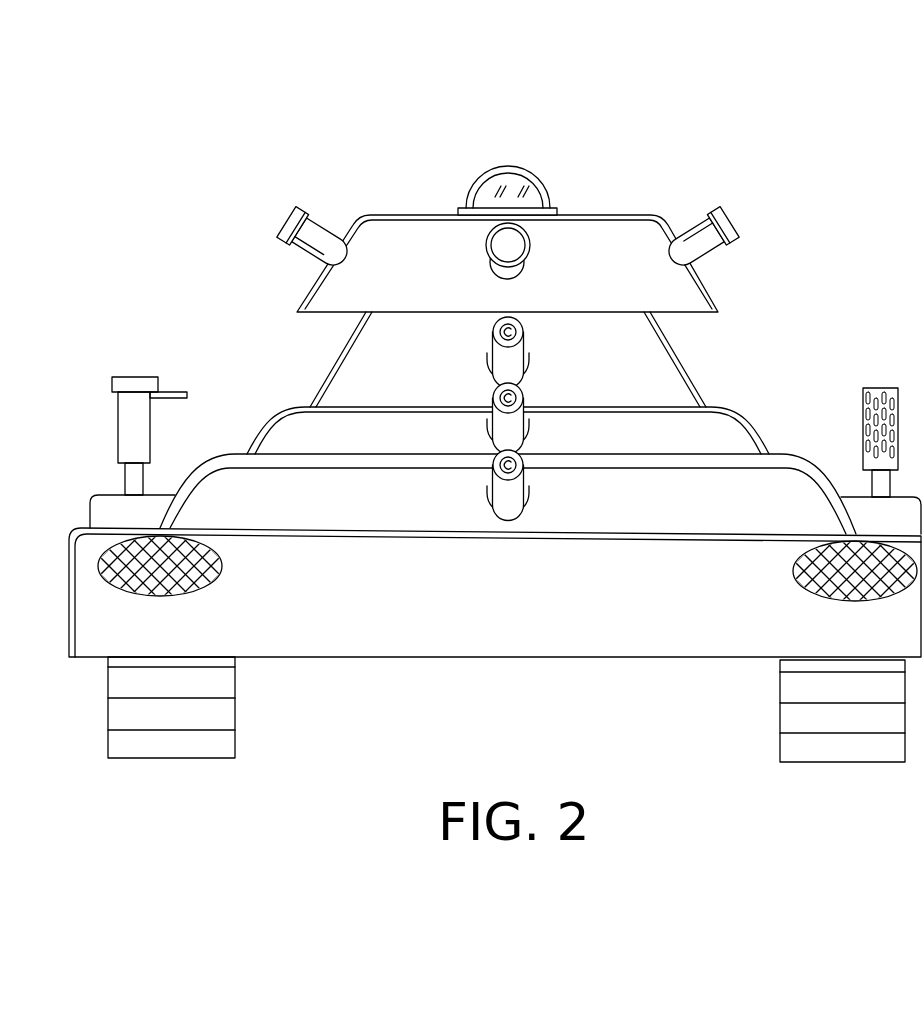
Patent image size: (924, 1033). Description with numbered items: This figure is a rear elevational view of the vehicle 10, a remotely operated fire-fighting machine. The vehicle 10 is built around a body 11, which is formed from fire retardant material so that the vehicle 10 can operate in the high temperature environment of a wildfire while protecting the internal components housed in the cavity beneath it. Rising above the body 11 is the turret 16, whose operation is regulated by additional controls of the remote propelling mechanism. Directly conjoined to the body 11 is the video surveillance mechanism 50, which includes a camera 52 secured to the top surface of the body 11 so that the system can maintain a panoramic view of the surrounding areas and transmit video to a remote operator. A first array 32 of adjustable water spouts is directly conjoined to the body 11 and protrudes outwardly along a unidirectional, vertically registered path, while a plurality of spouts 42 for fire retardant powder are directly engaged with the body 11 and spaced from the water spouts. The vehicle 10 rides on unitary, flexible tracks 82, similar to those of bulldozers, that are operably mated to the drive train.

The vehicle 10 is at (462, 453).
The body 11 is at (582, 660).
The turret 16 is at (597, 213).
The first array of adjustable water spouts 32 is at (520, 468).
The spouts 42 is at (277, 223).
The video surveillance mechanism 50 is at (506, 204).
The camera 52 is at (518, 167).
The tracks 82 is at (183, 758).